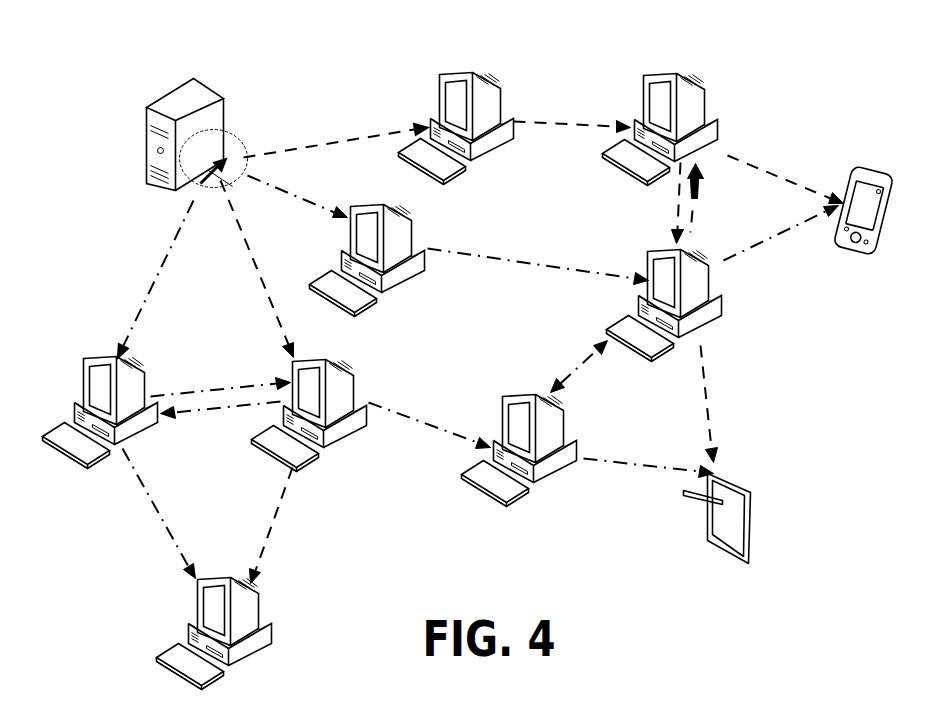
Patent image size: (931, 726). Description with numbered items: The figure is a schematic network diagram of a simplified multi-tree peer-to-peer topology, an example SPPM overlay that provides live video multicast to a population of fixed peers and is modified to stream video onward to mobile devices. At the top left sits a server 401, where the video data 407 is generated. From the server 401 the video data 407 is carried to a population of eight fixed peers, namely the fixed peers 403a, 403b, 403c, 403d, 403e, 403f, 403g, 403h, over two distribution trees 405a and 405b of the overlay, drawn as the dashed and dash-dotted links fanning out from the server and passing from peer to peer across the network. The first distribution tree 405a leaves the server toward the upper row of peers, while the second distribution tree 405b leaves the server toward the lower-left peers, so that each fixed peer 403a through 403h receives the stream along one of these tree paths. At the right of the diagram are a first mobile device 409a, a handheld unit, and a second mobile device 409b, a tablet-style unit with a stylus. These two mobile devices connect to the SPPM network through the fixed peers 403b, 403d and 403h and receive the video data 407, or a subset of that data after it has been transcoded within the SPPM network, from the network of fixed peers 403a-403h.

The server 401 is at (190, 84).
The video data 407 is at (244, 132).
The distribution tree 405a is at (382, 130).
The distribution tree 405b is at (175, 230).
The fixed peer 403a is at (455, 72).
The fixed peer 403b is at (658, 73).
The fixed peer 403c is at (375, 205).
The fixed peer 403d is at (652, 252).
The fixed peer 403e is at (290, 358).
The fixed peer 403f is at (100, 356).
The fixed peer 403g is at (190, 613).
The fixed peer 403h is at (503, 395).
The first mobile device 409a is at (857, 170).
The second mobile device 409b is at (727, 472).